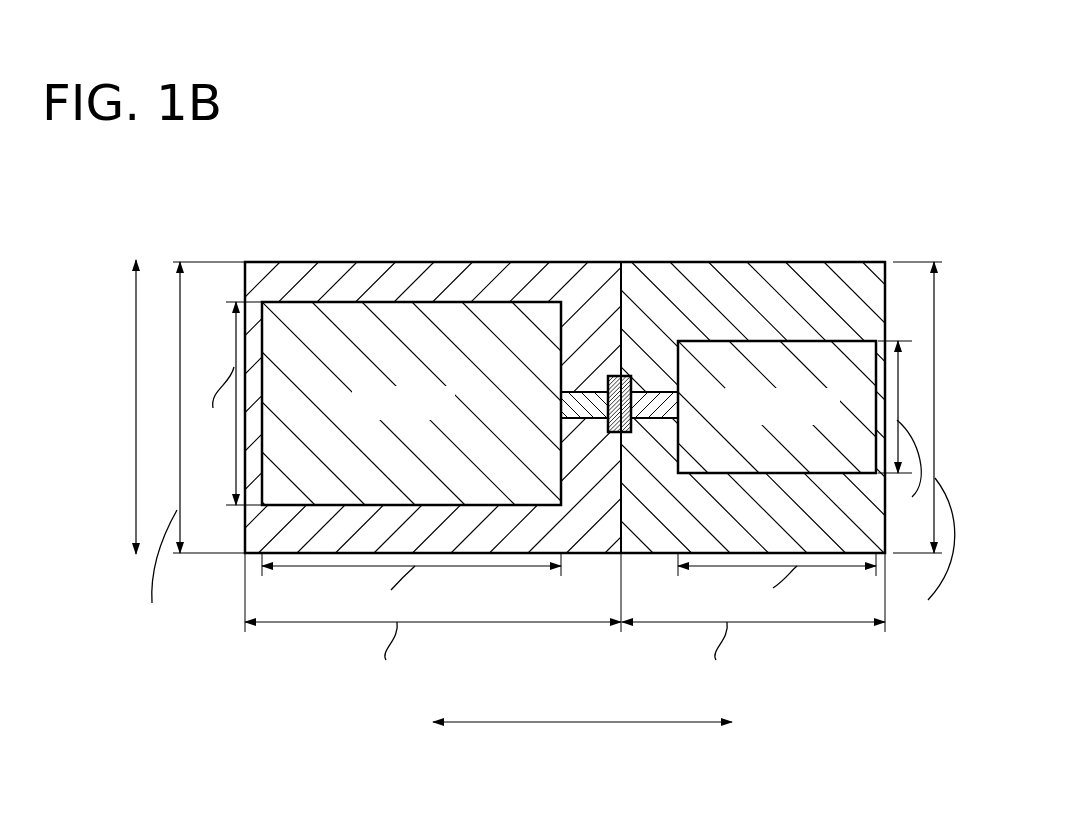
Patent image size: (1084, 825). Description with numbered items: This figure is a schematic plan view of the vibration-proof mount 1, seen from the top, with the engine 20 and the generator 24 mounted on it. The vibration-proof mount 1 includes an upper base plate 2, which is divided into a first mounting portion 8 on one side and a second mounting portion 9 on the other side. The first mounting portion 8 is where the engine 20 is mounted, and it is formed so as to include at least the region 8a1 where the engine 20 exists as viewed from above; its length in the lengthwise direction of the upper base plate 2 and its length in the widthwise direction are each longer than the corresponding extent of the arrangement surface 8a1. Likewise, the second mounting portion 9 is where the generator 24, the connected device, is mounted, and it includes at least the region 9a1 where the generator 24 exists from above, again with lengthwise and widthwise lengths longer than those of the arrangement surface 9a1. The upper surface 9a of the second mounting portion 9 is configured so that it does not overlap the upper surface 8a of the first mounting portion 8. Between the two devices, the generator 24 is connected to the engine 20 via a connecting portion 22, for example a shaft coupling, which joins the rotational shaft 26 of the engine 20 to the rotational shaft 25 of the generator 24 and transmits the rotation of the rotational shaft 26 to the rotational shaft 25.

The vibration-proof mount 1 is at (884, 230).
The upper base plate 2 is at (648, 188).
The first mounting portion 8 is at (433, 376).
The upper surface of the first mounting portion 8a is at (337, 282).
The arrangement surface 8a1 is at (293, 322).
The second mounting portion 9 is at (753, 376).
The upper surface of the second mounting portion 9a is at (802, 285).
The arrangement surface 9a1 is at (758, 360).
The engine 20 is at (437, 298).
The connecting portion 22 is at (607, 376).
The generator 24 is at (854, 338).
The rotational shaft of the generator 25 is at (660, 388).
The rotational shaft of the engine 26 is at (566, 388).